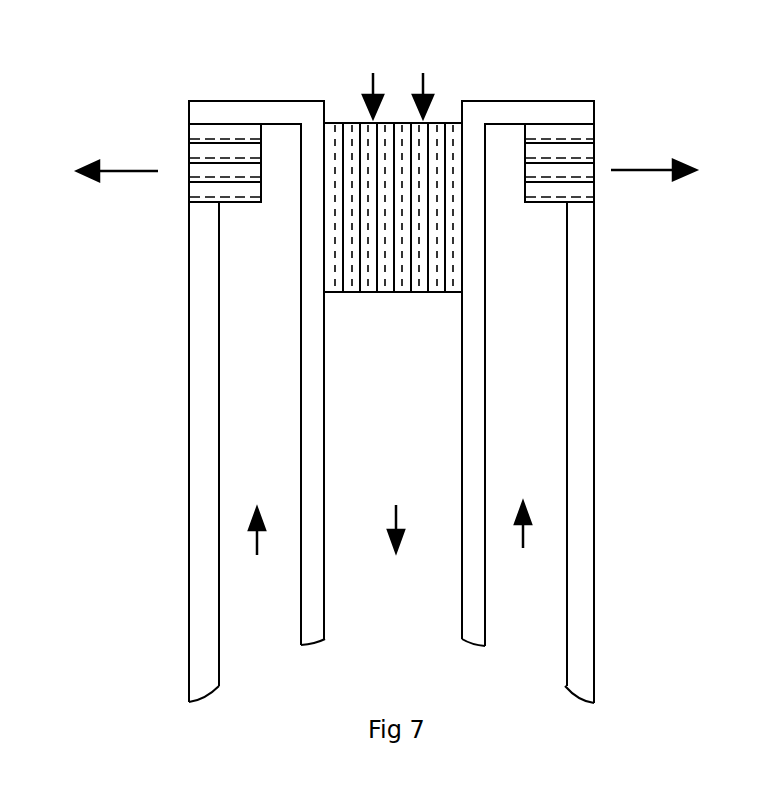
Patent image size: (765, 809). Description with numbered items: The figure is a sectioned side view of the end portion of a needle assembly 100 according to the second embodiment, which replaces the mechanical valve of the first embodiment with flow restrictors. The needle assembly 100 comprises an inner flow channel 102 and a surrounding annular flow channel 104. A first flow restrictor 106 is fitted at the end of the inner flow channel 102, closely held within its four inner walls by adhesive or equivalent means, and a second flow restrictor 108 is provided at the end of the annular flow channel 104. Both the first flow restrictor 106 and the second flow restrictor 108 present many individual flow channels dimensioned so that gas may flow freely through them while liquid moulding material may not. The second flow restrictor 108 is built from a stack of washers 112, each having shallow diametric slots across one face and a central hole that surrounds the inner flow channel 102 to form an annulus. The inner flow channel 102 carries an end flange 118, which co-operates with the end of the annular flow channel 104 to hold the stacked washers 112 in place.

The needle assembly 100 is at (164, 357).
The inner flow channel 102 is at (422, 617).
The annular flow channel 104 is at (550, 383).
The first flow restrictor 106 is at (390, 317).
The second flow restrictor 108 is at (524, 218).
The washer 112 is at (583, 131).
The end flange 118 is at (220, 113).